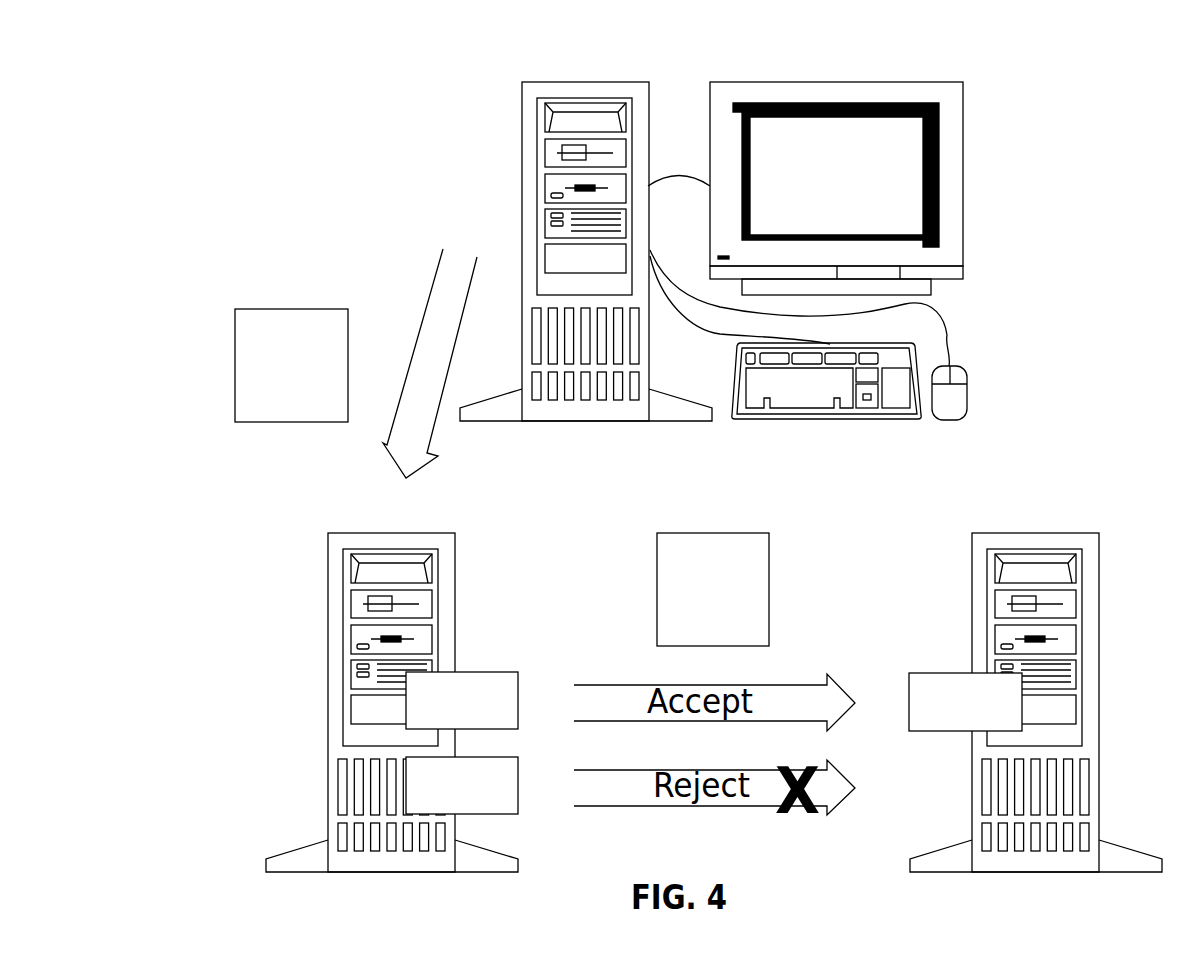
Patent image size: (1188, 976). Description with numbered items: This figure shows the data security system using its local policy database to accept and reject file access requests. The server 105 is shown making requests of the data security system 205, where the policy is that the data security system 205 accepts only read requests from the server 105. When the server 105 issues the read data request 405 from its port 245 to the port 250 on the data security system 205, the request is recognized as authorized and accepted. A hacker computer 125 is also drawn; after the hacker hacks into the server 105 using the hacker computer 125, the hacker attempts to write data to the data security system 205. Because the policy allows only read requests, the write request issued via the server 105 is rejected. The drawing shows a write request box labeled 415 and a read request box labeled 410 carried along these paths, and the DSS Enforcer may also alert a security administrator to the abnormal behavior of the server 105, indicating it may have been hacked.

The hacker computer 125 is at (499, 38).
The write request 415 is at (280, 309).
The read request 410 is at (700, 533).
The server 105 is at (370, 533).
The data security system 205 is at (1015, 533).
The port 245 is at (478, 672).
The read data request 405 is at (474, 757).
The port 250 is at (950, 673).